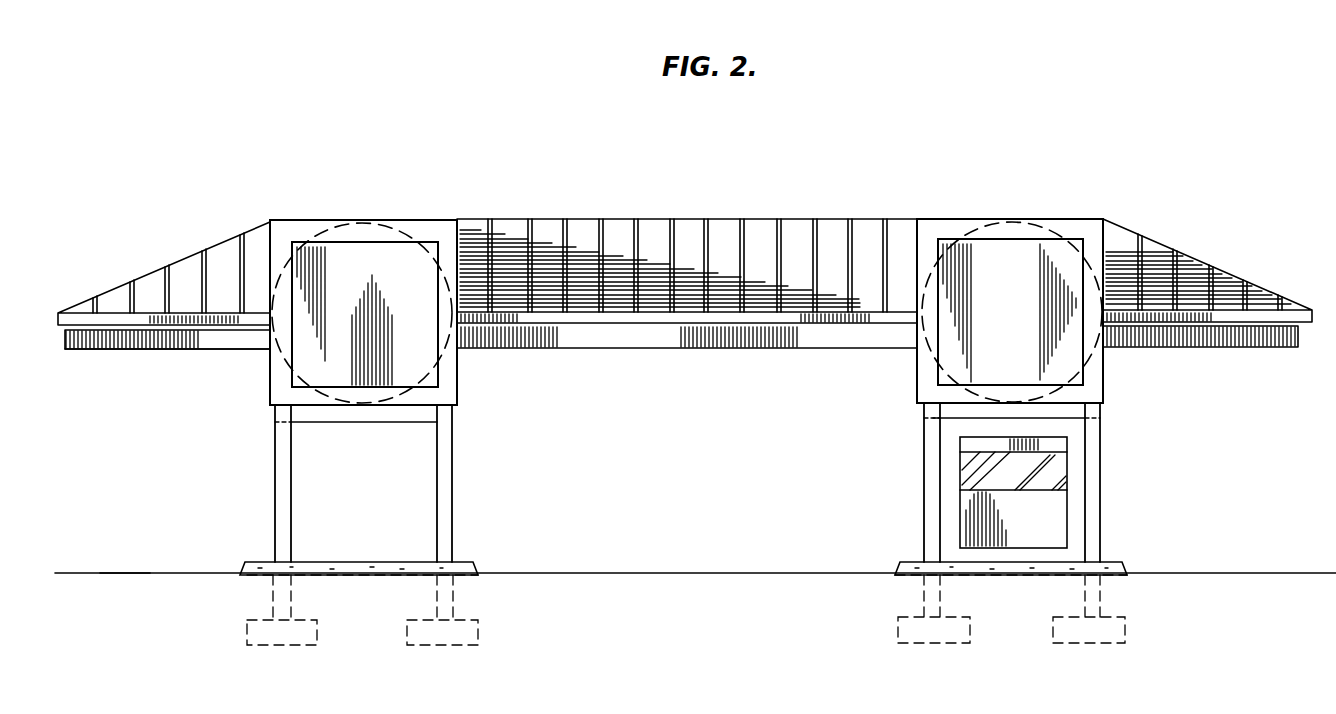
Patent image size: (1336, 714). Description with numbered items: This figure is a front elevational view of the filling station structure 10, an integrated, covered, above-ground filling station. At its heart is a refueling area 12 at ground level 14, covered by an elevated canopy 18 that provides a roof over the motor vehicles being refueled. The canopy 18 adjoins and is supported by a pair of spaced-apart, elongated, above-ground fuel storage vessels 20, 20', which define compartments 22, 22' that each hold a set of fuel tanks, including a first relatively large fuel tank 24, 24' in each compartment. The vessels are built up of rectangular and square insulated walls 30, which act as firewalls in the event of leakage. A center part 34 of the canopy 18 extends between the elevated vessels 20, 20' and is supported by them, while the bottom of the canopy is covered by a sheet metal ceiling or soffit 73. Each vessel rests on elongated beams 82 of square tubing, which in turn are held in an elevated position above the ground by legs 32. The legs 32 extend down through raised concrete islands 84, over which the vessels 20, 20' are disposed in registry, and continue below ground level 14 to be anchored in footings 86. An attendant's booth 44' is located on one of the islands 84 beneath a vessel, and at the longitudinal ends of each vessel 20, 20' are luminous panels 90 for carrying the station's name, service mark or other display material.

The filling station structure 10 is at (998, 200).
The refueling area 12 is at (177, 572).
The ground level 14 is at (122, 566).
The canopy 18 is at (86, 299).
The fuel storage vessel 20 is at (374, 276).
The fuel storage vessel 20' is at (1021, 283).
The compartment 22 is at (291, 289).
The compartment 22' is at (925, 288).
The first relatively large fuel tank 24 is at (362, 288).
The first relatively large fuel tank 24' is at (1012, 281).
The walls 30 is at (450, 219).
The legs 32 is at (276, 452).
The center part 34 is at (81, 352).
The attendant's booth 44' is at (1060, 492).
The soffit 73 is at (764, 352).
The elongated beams 82 is at (280, 412).
The raised concrete islands 84 is at (458, 557).
The footings 86 is at (298, 638).
The luminous panels 90 is at (298, 381).